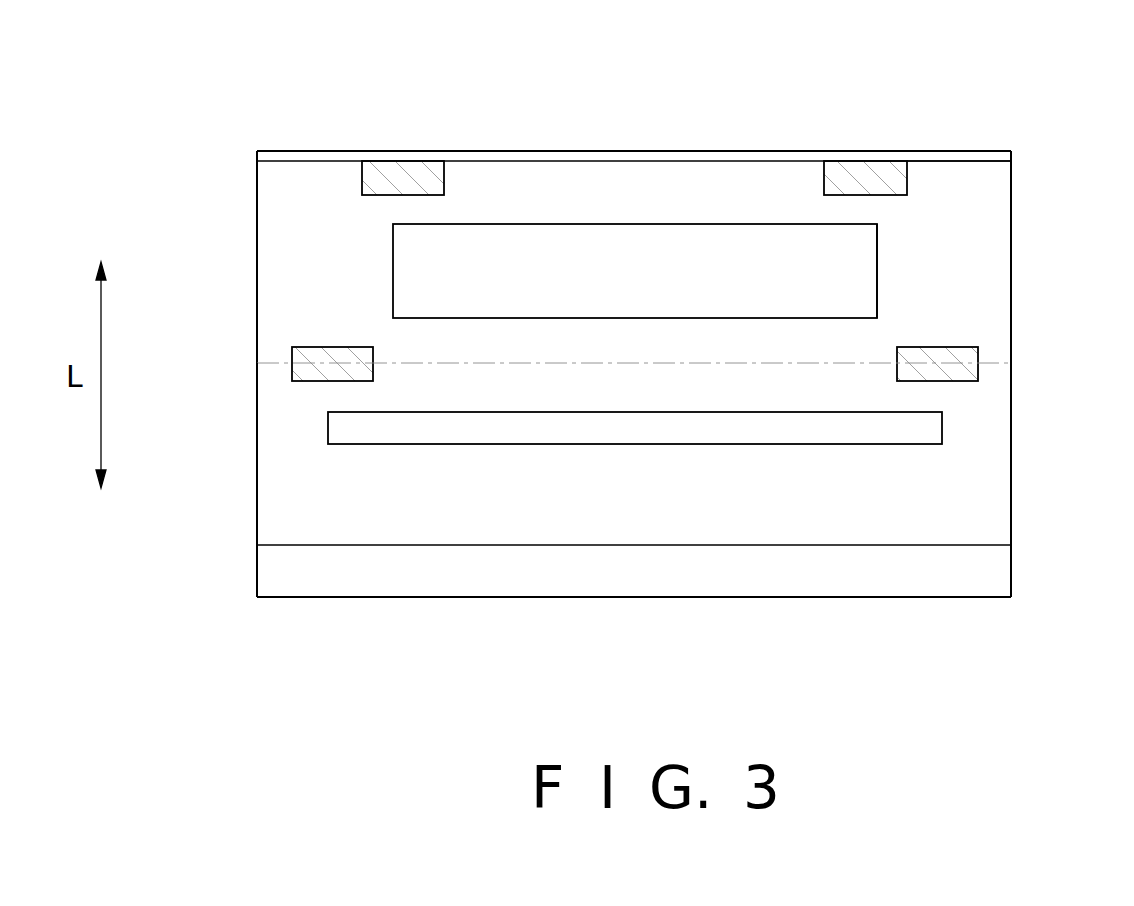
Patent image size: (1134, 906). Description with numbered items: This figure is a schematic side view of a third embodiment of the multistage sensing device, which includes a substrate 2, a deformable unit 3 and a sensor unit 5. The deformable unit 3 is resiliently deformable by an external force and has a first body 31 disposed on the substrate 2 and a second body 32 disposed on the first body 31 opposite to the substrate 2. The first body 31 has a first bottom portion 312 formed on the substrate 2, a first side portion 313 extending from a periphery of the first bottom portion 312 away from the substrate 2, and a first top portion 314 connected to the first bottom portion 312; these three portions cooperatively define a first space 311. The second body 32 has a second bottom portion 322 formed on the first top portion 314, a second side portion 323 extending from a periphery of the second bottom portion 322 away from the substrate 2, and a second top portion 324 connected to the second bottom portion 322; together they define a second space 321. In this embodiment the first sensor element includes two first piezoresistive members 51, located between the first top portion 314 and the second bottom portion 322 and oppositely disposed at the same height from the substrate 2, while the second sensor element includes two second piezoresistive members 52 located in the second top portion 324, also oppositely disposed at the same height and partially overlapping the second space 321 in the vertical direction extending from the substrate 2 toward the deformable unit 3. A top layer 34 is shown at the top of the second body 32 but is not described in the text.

The deformable unit 3 is at (237, 150).
The substrate 2 is at (987, 577).
The sensor unit 5 is at (625, 506).
The first body 31 is at (253, 459).
The second body 32 is at (253, 277).
The top plate 34 is at (945, 155).
The first piezoresistive members 51 is at (332, 363).
The second piezoresistive members 52 is at (403, 178).
The first space 311 is at (631, 430).
The first bottom portion 312 is at (976, 505).
The first side portion 313 is at (985, 412).
The first top portion 314 is at (857, 379).
The second space 321 is at (523, 250).
The second bottom portion 322 is at (930, 312).
The second side portion 323 is at (948, 242).
The second top portion 324 is at (781, 186).